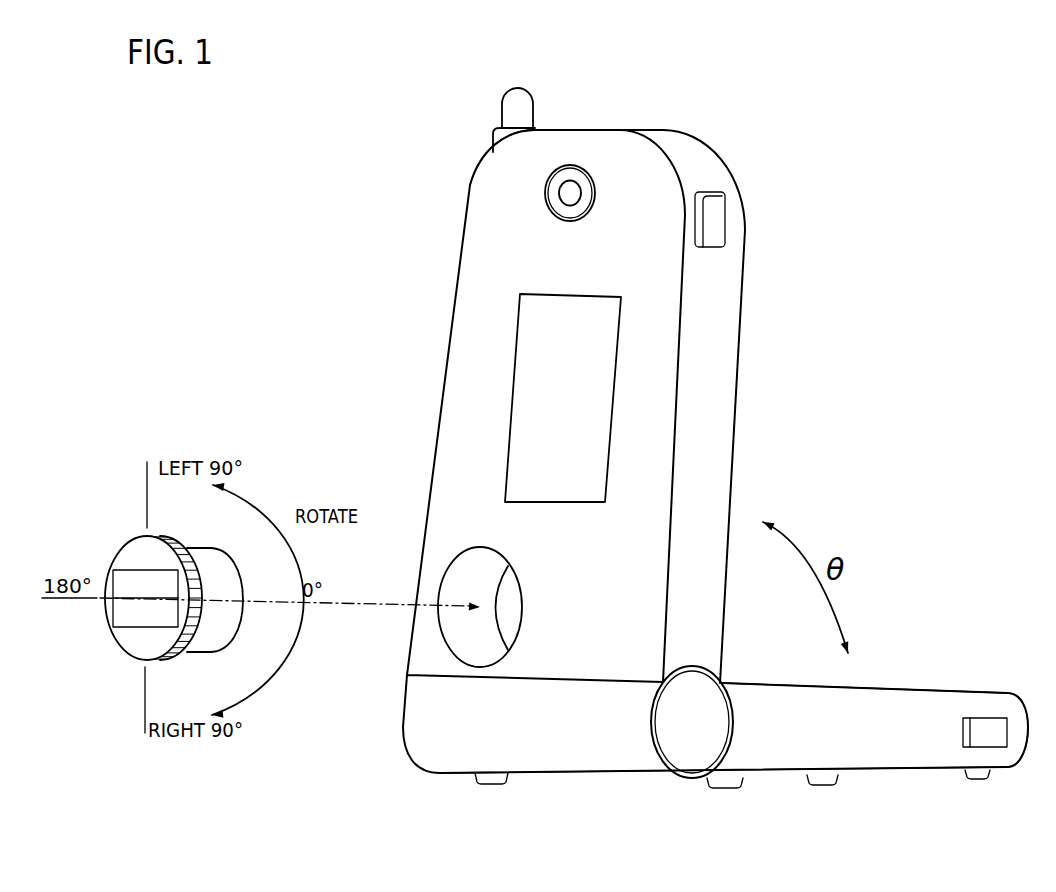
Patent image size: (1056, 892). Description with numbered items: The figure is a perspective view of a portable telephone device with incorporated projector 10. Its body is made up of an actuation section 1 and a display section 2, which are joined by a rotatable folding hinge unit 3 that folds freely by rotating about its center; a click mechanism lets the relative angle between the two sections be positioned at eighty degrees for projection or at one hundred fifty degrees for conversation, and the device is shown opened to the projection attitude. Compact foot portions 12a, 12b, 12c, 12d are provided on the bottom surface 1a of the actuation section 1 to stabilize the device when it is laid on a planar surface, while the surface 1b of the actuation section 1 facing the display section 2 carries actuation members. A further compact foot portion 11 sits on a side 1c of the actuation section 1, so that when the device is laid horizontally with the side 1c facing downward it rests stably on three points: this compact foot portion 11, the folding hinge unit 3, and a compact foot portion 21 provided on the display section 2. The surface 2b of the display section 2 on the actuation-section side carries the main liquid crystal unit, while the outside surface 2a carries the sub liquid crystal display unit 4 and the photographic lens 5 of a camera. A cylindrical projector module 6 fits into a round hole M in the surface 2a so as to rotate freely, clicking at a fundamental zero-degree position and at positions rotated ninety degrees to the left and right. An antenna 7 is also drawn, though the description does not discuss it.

The actuation section 1 is at (788, 766).
The bottom surface of the actuation section 1a is at (897, 784).
The surface of the actuation section on the display section side 1b is at (907, 681).
The side of the actuation section 1c is at (876, 756).
The display section 2 is at (697, 163).
The outside surface of the display section 2a is at (488, 258).
The surface of the display section on the actuation section side 2b is at (745, 334).
The folding hinge unit 3 is at (677, 757).
The sub liquid crystal display unit 4 is at (523, 383).
The photographic lens 5 is at (571, 175).
The projector module 6 is at (115, 637).
The antenna 7 is at (497, 106).
The portable telephone device with incorporated projector 10 is at (968, 387).
The compact foot portion 11 is at (990, 727).
The compact foot portion 12a is at (740, 788).
The compact foot portion 12b is at (498, 784).
The compact foot portion 12c is at (983, 779).
The compact foot portion 12d is at (816, 785).
The compact foot portion 21 is at (718, 222).
The round hole M is at (526, 586).